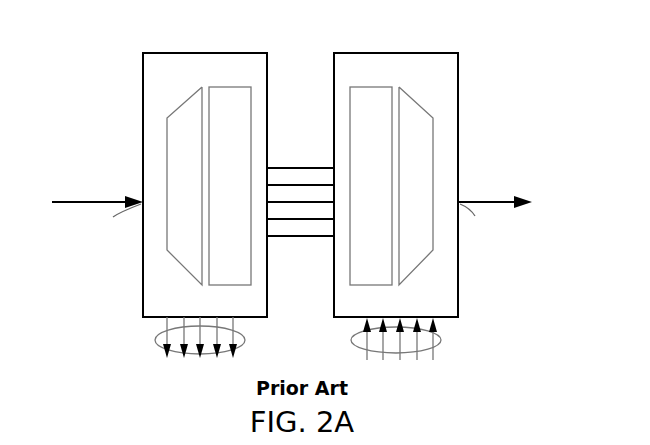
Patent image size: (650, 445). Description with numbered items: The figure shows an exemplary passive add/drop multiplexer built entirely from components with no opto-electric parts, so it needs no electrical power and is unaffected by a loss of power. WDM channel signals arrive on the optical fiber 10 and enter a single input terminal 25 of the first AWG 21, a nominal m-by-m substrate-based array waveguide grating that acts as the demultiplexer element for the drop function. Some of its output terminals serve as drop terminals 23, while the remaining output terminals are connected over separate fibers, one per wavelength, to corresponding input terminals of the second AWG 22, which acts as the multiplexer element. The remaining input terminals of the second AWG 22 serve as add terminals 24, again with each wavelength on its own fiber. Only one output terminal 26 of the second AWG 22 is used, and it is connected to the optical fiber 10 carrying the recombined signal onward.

The optical fiber 10 is at (85, 200).
The first AWG 21 is at (208, 53).
The second AWG 22 is at (369, 53).
The drop terminals 23 is at (155, 334).
The add terminals 24 is at (441, 332).
The input terminal 25 is at (141, 205).
The output terminal 26 is at (460, 204).